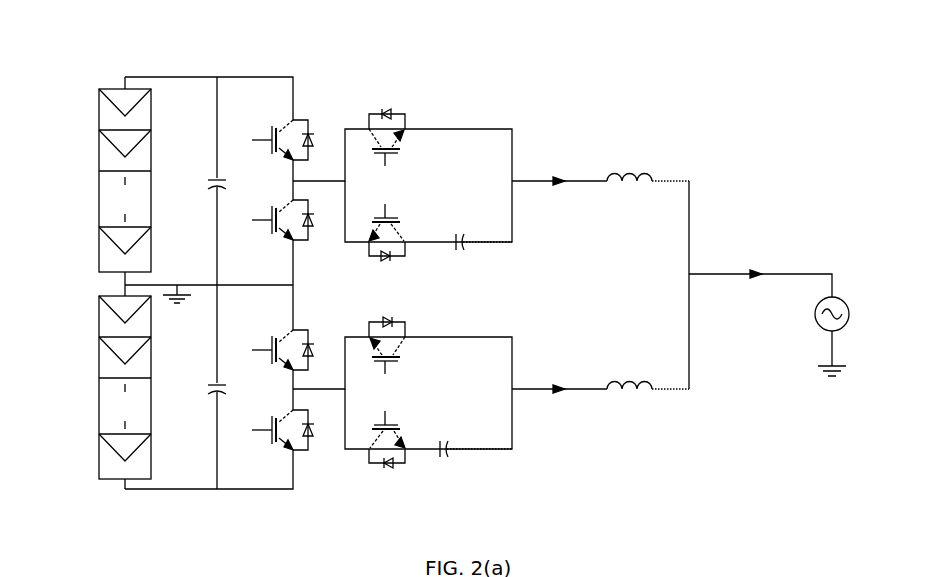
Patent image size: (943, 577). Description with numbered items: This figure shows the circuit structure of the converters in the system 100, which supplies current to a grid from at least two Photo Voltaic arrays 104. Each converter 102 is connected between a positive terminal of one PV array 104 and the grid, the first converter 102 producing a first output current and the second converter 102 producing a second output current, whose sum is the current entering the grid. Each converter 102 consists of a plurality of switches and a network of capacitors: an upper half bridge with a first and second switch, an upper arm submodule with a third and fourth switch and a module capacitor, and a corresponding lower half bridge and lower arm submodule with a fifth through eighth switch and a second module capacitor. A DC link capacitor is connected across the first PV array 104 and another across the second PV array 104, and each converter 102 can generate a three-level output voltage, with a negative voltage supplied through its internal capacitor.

The system 100 is at (98, 61).
The converter 102 is at (478, 283).
The Photo Voltaic (PV) array 104 is at (100, 171).